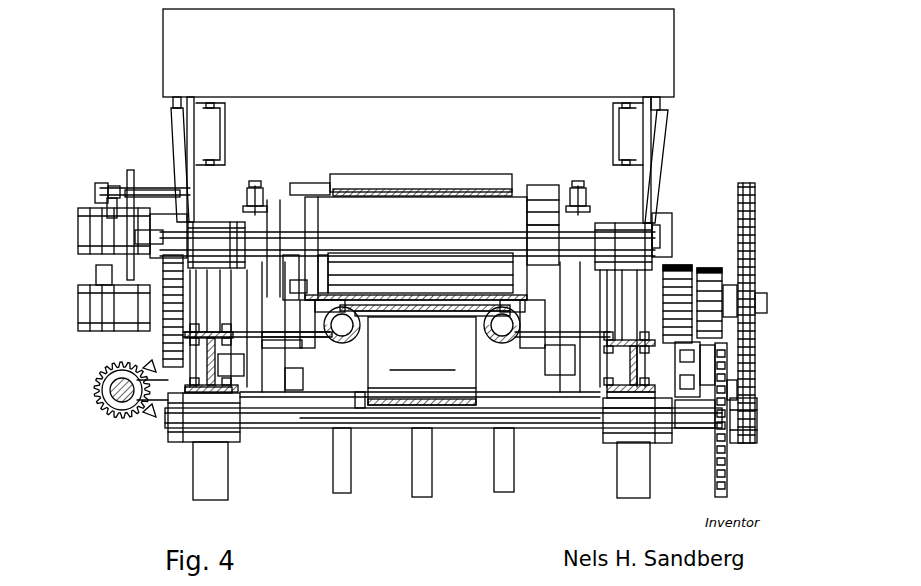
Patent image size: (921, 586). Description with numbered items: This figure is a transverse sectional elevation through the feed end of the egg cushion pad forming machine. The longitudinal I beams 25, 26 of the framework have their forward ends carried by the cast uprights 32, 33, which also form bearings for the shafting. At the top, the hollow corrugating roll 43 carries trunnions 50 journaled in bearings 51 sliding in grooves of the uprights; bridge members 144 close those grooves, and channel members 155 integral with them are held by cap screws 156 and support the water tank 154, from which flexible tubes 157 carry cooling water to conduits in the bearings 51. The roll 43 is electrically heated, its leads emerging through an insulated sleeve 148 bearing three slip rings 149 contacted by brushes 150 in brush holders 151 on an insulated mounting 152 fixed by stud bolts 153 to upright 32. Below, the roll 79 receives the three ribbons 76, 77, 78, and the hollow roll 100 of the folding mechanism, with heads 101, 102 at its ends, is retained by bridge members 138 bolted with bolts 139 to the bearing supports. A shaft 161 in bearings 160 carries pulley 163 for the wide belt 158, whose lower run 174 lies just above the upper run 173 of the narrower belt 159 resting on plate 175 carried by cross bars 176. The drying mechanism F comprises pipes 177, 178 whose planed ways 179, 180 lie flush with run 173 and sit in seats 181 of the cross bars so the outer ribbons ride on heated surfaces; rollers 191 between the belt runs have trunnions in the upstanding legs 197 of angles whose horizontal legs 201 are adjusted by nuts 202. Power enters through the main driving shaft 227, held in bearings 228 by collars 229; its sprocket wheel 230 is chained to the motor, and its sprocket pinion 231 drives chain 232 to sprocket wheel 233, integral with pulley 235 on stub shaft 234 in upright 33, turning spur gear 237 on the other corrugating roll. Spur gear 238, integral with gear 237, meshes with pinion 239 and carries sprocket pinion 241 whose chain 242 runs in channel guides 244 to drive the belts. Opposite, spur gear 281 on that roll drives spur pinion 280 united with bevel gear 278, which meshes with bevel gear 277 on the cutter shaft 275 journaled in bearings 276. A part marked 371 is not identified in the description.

The water tank 154 is at (650, 62).
The channel members 155 is at (196, 128).
The cap screws 156 is at (630, 167).
The bridge members 144 is at (222, 168).
The flexible tubes 157 is at (173, 135).
The bearings 160 is at (213, 230).
The trunnions 50 is at (75, 220).
The slip rings 149 is at (110, 246).
The brushes 150 is at (100, 185).
The brush holders 151 is at (113, 186).
The insulated mounting 152 is at (130, 170).
The insulated sleeve 148 is at (150, 190).
The stud bolts 153 is at (165, 195).
The bridge members 138 is at (242, 200).
The bolts 139 is at (270, 195).
The head 101 is at (292, 195).
The roll 100 is at (313, 195).
The corrugating roll 43 is at (315, 200).
The belt 158 is at (398, 192).
The pulley 163 is at (372, 196).
The shaft 161 is at (535, 200).
The head 102 is at (548, 200).
The rollers 191 is at (405, 262).
The horizontal legs 201 is at (320, 262).
The nuts 202 is at (312, 283).
The way 179 is at (345, 305).
The lower run 174 is at (445, 300).
The way 180 is at (490, 311).
The upstanding legs 197 is at (520, 311).
The plate 175 is at (405, 318).
The pipe 178 is at (528, 360).
The upper run 173 is at (440, 330).
The seats 181 is at (372, 362).
The drying mechanism F is at (475, 340).
The cross bars 176 is at (275, 348).
The pipe 177 is at (320, 337).
The roll 79 is at (362, 408).
The belt 159 is at (450, 420).
The upright 32 is at (205, 470).
The ribbon 76 is at (341, 478).
The ribbon 77 is at (420, 482).
The ribbon 78 is at (508, 478).
The upright 33 is at (634, 470).
The collars 229 is at (174, 432).
The bearings 228 is at (197, 430).
The I beam 25 is at (215, 400).
The I beam 26 is at (563, 420).
The main driving shaft 227 is at (620, 460).
The bevel gear 277 is at (100, 381).
The bearings 276 is at (110, 384).
The shaft 275 is at (113, 397).
The bevel gear 278 is at (148, 372).
The spur pinion 280 is at (160, 405).
The spur gear 281 is at (165, 342).
The frame 371 is at (249, 301).
The spur gear 237 is at (667, 305).
The bearings 51 is at (657, 278).
The spur gear 238 is at (720, 290).
The pulley 235 is at (740, 285).
The sprocket wheel 233 is at (755, 195).
The stub shaft 234 is at (767, 302).
The pinion 239 is at (710, 340).
The chain 242 is at (718, 357).
The chain 232 is at (752, 372).
The sprocket pinion 241 is at (745, 390).
The sprocket pinion 231 is at (760, 442).
The sprocket wheel 230 is at (730, 482).
The channel guides 244 is at (708, 425).